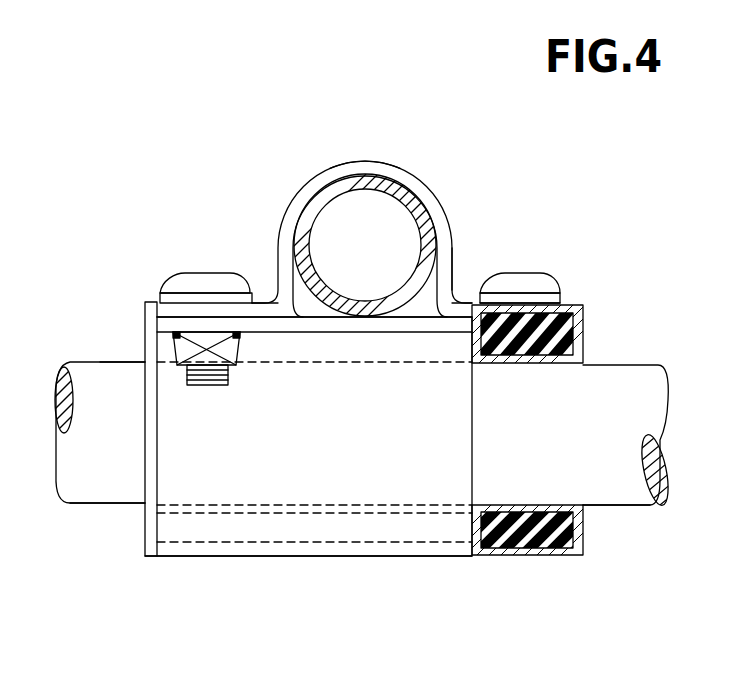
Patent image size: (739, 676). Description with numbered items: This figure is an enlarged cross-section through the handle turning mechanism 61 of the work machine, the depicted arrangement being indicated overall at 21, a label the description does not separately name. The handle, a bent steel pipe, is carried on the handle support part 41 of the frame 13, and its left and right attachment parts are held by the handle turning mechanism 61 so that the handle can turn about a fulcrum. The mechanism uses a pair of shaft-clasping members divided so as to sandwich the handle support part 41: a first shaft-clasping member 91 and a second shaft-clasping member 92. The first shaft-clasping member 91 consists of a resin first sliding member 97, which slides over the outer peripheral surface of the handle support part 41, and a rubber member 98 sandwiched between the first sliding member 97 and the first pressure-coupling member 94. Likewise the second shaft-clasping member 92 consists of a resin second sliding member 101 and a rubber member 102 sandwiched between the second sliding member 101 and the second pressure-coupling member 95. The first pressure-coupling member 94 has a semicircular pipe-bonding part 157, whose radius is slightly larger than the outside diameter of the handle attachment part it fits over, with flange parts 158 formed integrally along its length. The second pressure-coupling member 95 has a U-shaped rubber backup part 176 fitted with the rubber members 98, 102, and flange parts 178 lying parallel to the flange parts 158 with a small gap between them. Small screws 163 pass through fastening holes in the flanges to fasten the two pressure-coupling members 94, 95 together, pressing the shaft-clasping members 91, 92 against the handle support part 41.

The connector assembly 21 is at (151, 130).
The frame 13 is at (74, 330).
The handle support part 41 is at (127, 362).
The handle turning mechanism 61 is at (246, 205).
The pipe-bonding part 157 is at (395, 167).
The first pressure-coupling member 94 is at (440, 200).
The flange parts 158 is at (260, 300).
The small screws 163 is at (175, 275).
The rubber member 98 is at (550, 292).
The first shaft-clasping member 91 is at (585, 330).
The first sliding member 97 is at (596, 380).
The second sliding member 101 is at (588, 482).
The second shaft-clasping member 92 is at (580, 533).
The rubber member 102 is at (522, 540).
The second pressure-coupling member 95 is at (265, 557).
The rubber backup part 176 is at (363, 490).
The flange parts 178 is at (434, 333).